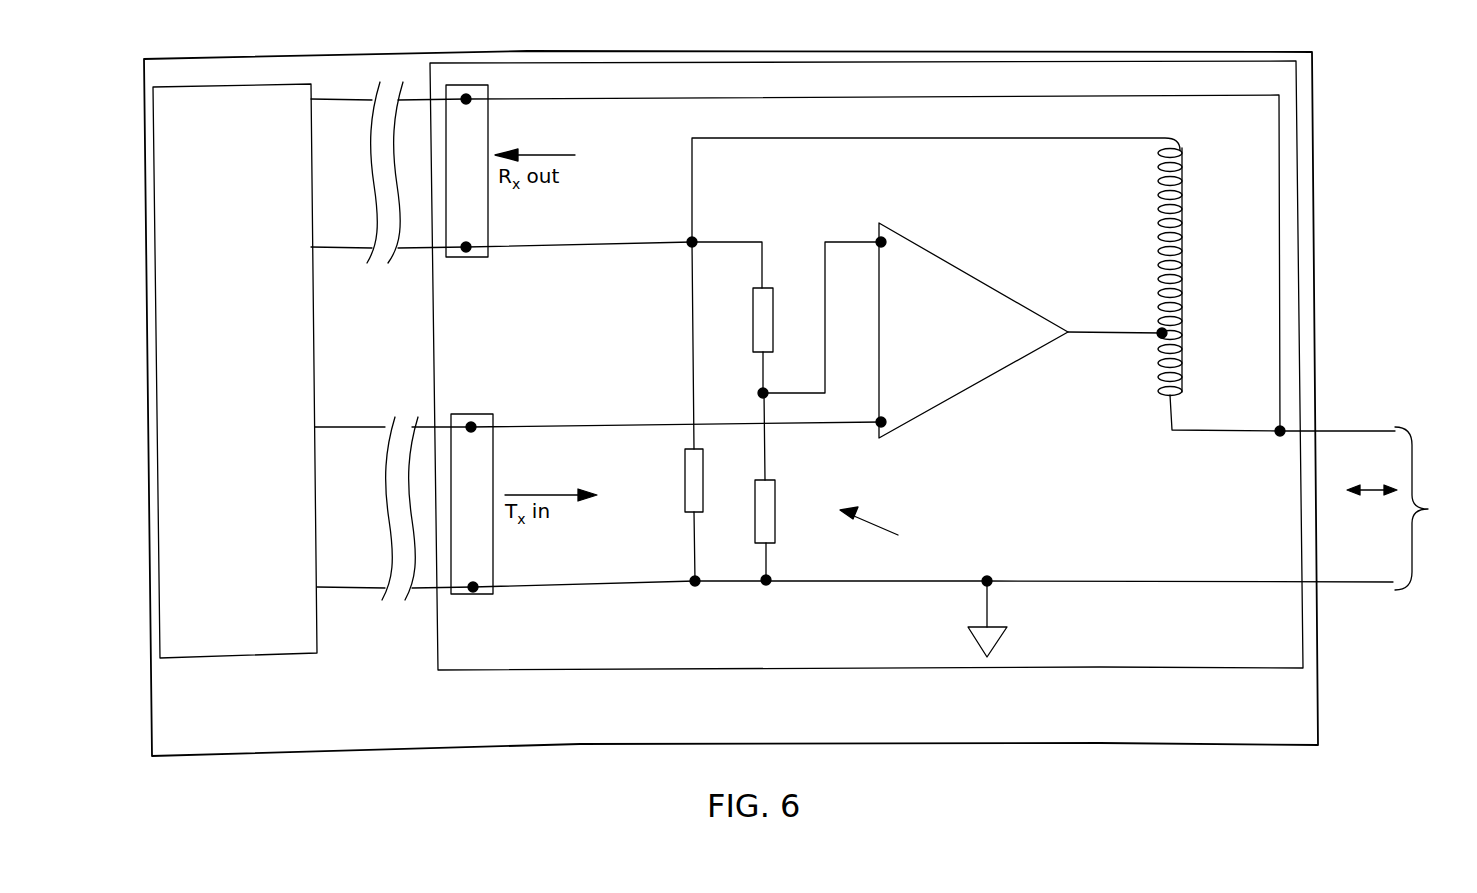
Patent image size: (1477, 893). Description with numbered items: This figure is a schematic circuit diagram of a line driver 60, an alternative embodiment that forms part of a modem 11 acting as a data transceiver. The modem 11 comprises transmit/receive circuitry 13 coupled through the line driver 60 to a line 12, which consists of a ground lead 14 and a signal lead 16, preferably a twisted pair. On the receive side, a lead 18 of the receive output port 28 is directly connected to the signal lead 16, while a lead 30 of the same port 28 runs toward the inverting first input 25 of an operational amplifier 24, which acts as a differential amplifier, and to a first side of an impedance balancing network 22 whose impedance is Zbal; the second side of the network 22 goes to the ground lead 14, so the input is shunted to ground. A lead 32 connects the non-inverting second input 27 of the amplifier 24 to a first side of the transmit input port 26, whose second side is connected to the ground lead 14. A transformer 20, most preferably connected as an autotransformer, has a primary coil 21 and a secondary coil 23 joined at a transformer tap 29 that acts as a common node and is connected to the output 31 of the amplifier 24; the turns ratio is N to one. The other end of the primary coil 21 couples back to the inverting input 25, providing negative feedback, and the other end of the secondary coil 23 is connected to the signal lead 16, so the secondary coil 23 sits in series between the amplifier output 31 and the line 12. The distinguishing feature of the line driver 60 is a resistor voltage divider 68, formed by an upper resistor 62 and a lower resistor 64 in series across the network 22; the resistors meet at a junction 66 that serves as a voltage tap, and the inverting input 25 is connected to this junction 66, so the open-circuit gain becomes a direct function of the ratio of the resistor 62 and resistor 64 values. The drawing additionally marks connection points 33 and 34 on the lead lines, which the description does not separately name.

The modem 11 is at (850, 742).
The line 12 is at (1405, 508).
The transmit/receive circuitry 13 is at (231, 87).
The ground lead 14 is at (1243, 583).
The signal lead 16 is at (1330, 431).
The lead 18 is at (562, 96).
The transformer 20 is at (1160, 196).
The primary coil 21 is at (1180, 193).
The impedance balancing network 22 is at (703, 488).
The secondary coil 23 is at (1180, 355).
The operational amplifier 24 is at (958, 395).
The inverting first input 25 is at (880, 245).
The transmit input port 26 is at (473, 594).
The non-inverting second input 27 is at (881, 425).
The receive output port 28 is at (470, 257).
The transformer tap 29 is at (1162, 333).
The lead 30 is at (620, 243).
The output 31 is at (1072, 335).
The lead 32 is at (620, 427).
The line node 33 is at (1280, 431).
The node 34 is at (692, 242).
The line driver 60 is at (843, 665).
The upper resistor 62 is at (773, 318).
The lower resistor 64 is at (776, 525).
The junction 66 is at (762, 393).
The resistor voltage divider 68 is at (883, 532).